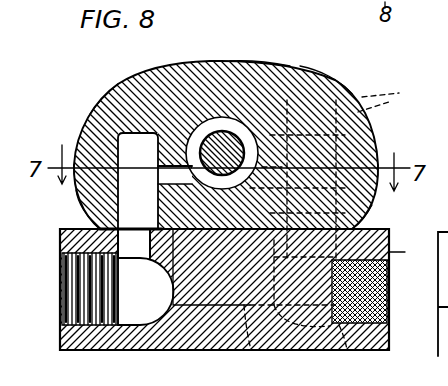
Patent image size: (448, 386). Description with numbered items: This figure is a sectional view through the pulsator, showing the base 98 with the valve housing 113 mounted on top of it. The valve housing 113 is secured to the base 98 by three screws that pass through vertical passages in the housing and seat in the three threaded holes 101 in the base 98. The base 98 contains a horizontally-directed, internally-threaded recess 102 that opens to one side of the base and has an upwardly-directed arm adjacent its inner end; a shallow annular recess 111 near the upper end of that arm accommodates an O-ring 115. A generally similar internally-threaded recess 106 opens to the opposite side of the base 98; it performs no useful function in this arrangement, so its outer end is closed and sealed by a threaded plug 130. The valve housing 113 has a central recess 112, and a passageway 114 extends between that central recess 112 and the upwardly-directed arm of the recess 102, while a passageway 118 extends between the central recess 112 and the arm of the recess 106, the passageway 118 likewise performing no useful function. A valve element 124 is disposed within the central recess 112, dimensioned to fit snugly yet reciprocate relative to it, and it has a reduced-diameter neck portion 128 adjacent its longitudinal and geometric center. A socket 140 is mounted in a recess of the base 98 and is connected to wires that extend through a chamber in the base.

The base 98 is at (188, 340).
The threaded holes 101 is at (377, 129).
The internally-threaded recess 102 is at (97, 350).
The internally-threaded recess 106 is at (346, 352).
The annular recess 111 is at (150, 262).
The central recess 112 is at (275, 68).
The valve housing 113 is at (334, 79).
The passageway 114 is at (84, 126).
The O-ring 115 is at (84, 210).
The passageway 118 is at (392, 98).
The valve element 124 is at (238, 126).
The reduced-diameter neck portion 128 is at (220, 134).
The threaded plug 130 is at (436, 276).
The socket 140 is at (250, 350).